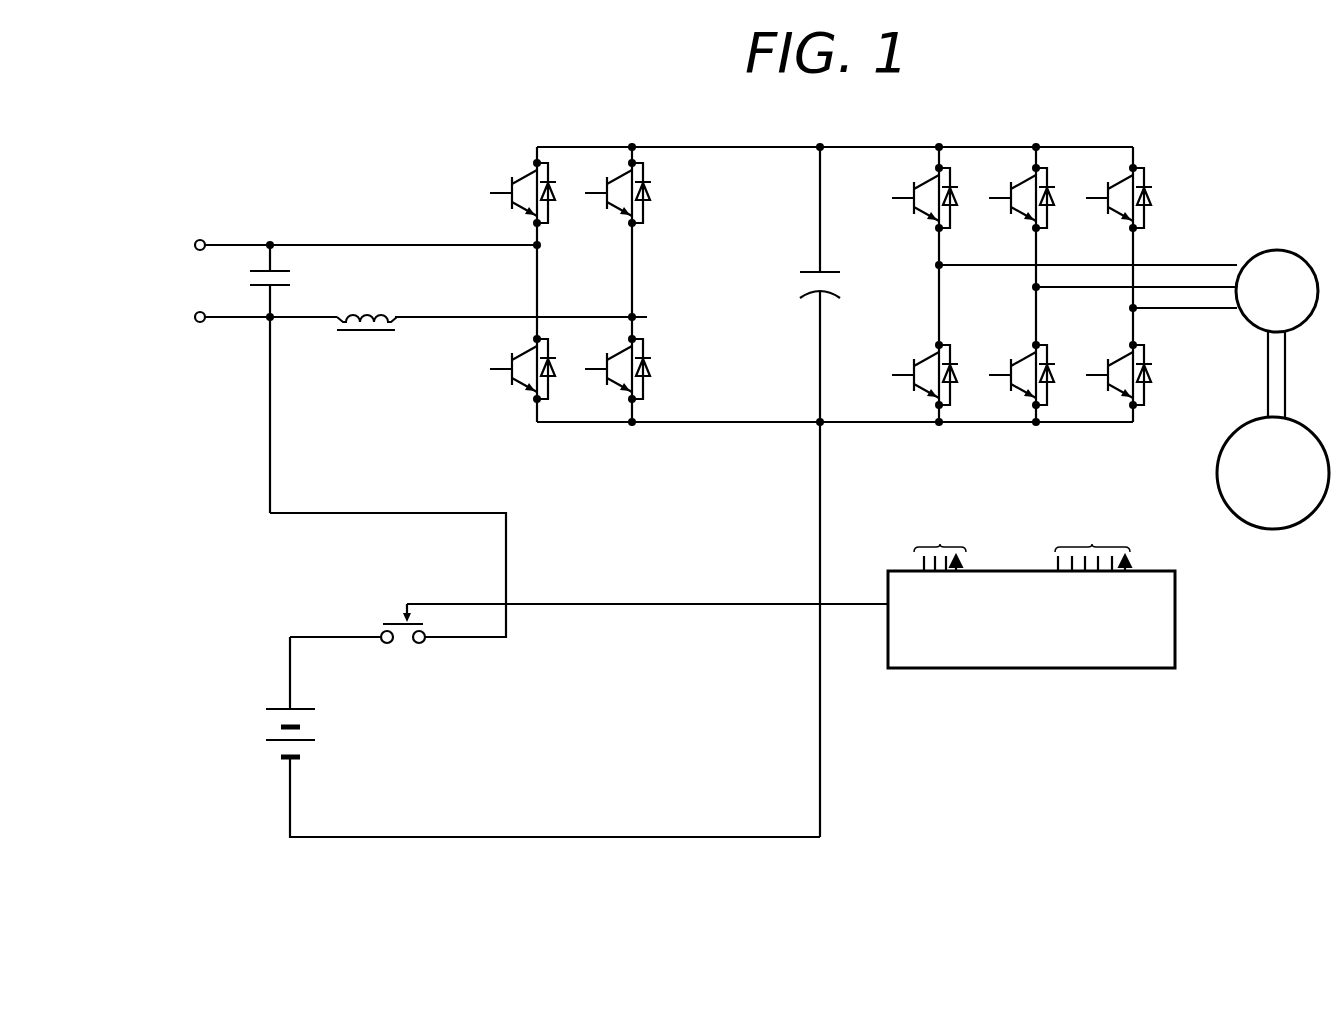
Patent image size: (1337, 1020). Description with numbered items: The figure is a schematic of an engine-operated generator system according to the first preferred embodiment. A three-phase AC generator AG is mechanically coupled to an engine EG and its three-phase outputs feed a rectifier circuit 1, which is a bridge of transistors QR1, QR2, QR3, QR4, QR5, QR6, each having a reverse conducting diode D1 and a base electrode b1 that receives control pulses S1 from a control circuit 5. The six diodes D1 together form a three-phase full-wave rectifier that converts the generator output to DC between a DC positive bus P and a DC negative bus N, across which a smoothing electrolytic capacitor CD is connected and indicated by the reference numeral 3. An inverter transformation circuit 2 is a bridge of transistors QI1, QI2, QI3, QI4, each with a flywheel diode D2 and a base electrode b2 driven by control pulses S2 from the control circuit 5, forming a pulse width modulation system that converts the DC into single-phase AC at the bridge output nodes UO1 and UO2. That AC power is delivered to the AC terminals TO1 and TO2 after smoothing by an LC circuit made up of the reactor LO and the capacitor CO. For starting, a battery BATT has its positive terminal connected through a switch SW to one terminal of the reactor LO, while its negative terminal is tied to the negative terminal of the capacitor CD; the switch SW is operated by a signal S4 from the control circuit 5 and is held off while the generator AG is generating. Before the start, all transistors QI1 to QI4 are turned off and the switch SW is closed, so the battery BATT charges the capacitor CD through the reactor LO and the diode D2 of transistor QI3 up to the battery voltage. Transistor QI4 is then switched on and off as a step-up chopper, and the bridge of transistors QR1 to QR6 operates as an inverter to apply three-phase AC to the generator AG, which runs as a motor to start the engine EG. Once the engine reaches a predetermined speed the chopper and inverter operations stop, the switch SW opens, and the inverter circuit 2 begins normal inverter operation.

The rectifier circuit 1 is at (1049, 286).
The inverter transformation circuit 2 is at (589, 285).
The DC link capacitor CD 3 is at (827, 490).
The control circuit 5 is at (791, 620).
The DC positive bus P is at (768, 147).
The DC negative bus N is at (745, 422).
The transistor QI1 is at (535, 171).
The transistor QI2 is at (535, 394).
The transistor QI3 is at (630, 171).
The transistor QI4 is at (629, 394).
The transistor QR1 is at (941, 174).
The transistor QR2 is at (941, 398).
The transistor QR3 is at (1037, 174).
The transistor QR4 is at (1037, 398).
The transistor QR5 is at (1134, 174).
The transistor QR6 is at (1131, 398).
The reverse conducting diode D1 is at (1152, 200).
The flywheel diode D2 is at (556, 195).
The base electrode b1 is at (905, 198).
The base electrode b2 is at (503, 193).
The smoothing electrolytic capacitor CD is at (809, 490).
The output node 1 UO1 is at (371, 231).
The output node 2 UO2 is at (426, 304).
The AC terminal TO1 is at (205, 230).
The system output terminal TO2 is at (205, 302).
The capacitor CO is at (289, 377).
The reactor LO is at (367, 304).
The switch SW is at (388, 578).
The battery BATT is at (506, 737).
The control pulses S1 is at (1092, 539).
The control pulses S2 is at (940, 539).
The switch control signal S4 is at (647, 592).
The three-phase AC generator AG is at (1277, 334).
The engine EG is at (1273, 473).